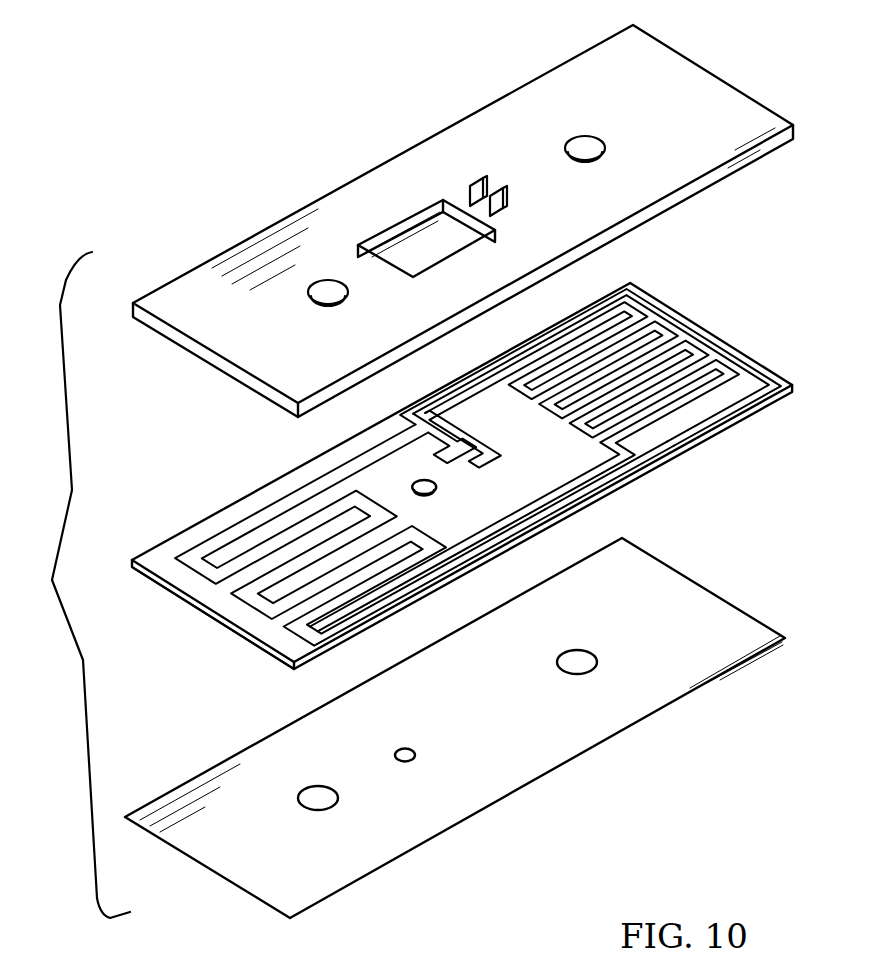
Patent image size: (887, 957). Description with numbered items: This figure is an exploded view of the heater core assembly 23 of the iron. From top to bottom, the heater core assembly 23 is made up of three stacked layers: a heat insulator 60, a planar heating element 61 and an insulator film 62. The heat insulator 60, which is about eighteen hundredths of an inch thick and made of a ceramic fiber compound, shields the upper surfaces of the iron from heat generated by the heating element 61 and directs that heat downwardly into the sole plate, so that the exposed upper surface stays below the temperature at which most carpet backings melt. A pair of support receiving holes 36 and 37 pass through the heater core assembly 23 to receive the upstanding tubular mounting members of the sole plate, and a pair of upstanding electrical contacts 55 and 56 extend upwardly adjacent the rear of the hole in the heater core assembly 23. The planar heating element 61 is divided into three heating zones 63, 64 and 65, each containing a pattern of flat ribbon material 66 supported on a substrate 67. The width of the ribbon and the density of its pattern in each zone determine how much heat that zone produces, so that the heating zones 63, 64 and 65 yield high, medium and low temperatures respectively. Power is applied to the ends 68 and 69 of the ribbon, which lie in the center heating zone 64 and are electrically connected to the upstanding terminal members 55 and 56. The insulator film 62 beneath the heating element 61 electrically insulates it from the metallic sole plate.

The heater core assembly 23 is at (69, 585).
The support receiving hole 36 is at (290, 235).
The support receiving hole 37 is at (605, 122).
The upstanding electrical contact 55 is at (429, 153).
The upstanding electrical contact 56 is at (507, 195).
The heat insulator 60 is at (463, 211).
The planar heating element 61 is at (462, 474).
The insulator film 62 is at (470, 728).
The heating zone 63 is at (413, 608).
The heating zone 64 is at (590, 515).
The heating zone 65 is at (718, 440).
The flat ribbon material 66 is at (342, 535).
The substrate 67 is at (213, 635).
The end of the ribbon 68 is at (440, 452).
The end of the ribbon 69 is at (499, 490).